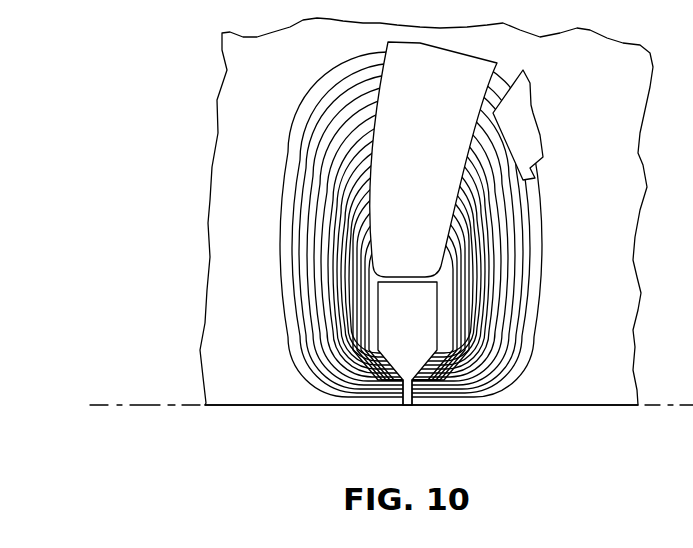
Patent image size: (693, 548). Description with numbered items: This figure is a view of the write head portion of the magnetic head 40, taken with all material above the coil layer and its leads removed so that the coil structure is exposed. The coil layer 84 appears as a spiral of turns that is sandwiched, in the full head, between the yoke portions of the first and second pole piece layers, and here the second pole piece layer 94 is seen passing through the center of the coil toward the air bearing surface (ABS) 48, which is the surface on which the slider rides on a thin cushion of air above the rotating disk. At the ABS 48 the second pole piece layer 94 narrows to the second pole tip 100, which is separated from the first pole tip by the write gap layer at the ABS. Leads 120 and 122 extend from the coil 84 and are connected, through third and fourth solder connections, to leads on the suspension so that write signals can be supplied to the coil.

The magnetic head 40 is at (558, 210).
The air bearing surface (ABS) 48 is at (147, 406).
The coil layer 84 is at (513, 302).
The second pole piece layer 94 is at (418, 334).
The second pole tip 100 is at (405, 410).
The lead 120 is at (437, 157).
The lead 122 is at (533, 115).